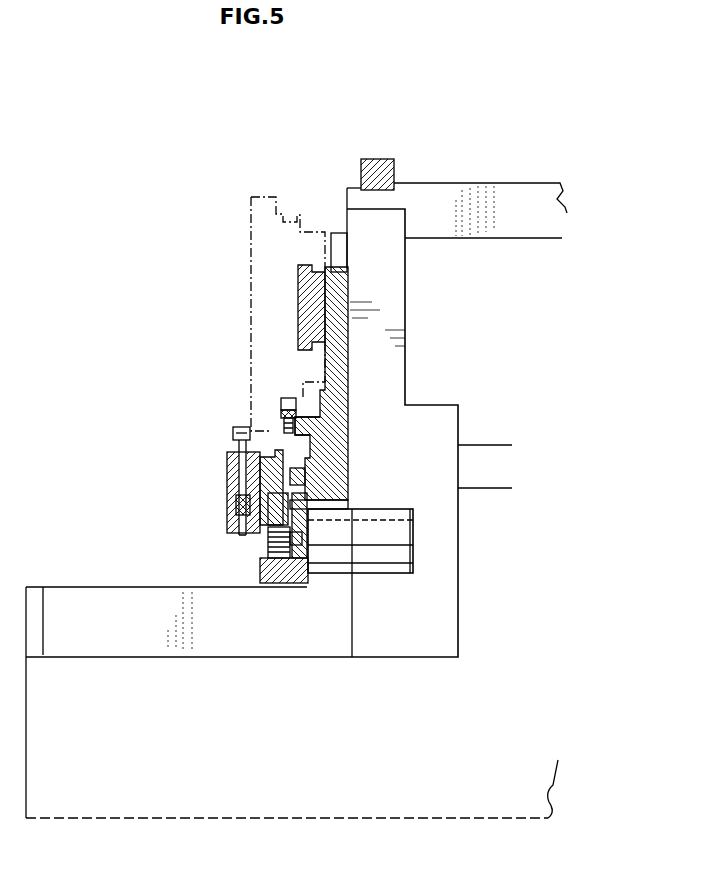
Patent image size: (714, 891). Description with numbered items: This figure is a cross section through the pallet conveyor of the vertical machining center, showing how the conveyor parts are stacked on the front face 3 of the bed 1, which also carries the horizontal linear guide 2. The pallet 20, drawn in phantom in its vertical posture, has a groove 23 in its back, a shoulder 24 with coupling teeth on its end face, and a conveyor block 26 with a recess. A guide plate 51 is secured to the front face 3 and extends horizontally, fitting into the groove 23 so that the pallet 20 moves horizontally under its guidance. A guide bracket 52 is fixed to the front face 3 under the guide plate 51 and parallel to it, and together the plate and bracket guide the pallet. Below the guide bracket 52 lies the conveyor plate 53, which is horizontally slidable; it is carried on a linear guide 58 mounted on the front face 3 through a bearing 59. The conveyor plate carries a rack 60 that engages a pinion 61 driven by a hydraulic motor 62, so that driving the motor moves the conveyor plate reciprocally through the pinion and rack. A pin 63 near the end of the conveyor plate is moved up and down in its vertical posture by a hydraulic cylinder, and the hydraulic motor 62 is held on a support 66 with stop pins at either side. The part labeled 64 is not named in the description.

The bed 1 is at (497, 192).
The horizontal linear guide 2 is at (394, 162).
The front face of the bed 3 is at (348, 325).
The pallet 20 is at (250, 220).
The groove 23 is at (305, 266).
The shoulder 24 is at (327, 232).
The conveyor block 26 is at (248, 422).
The guide plate 51 is at (305, 307).
The guide bracket 52 is at (300, 392).
The conveyor plate 53 is at (262, 488).
The linear guide 58 is at (306, 478).
The bearing 59 is at (357, 375).
The rack 60 is at (240, 530).
The pinion 61 is at (267, 556).
The hydraulic motor 62 is at (393, 575).
The pin 63 is at (228, 470).
The bolt 64 is at (236, 433).
The support 66 is at (276, 583).